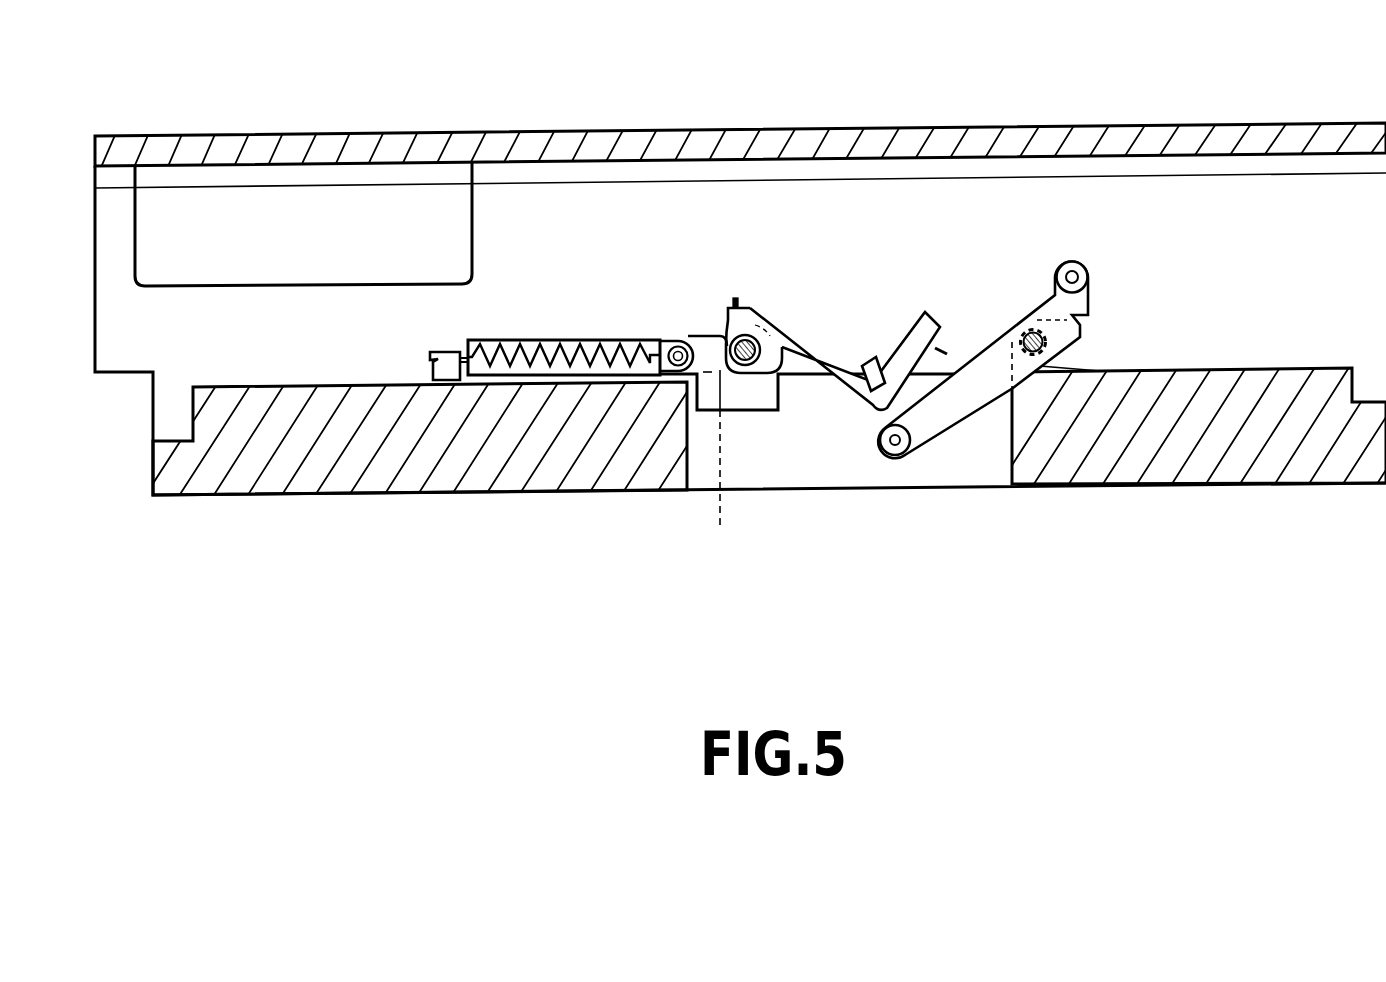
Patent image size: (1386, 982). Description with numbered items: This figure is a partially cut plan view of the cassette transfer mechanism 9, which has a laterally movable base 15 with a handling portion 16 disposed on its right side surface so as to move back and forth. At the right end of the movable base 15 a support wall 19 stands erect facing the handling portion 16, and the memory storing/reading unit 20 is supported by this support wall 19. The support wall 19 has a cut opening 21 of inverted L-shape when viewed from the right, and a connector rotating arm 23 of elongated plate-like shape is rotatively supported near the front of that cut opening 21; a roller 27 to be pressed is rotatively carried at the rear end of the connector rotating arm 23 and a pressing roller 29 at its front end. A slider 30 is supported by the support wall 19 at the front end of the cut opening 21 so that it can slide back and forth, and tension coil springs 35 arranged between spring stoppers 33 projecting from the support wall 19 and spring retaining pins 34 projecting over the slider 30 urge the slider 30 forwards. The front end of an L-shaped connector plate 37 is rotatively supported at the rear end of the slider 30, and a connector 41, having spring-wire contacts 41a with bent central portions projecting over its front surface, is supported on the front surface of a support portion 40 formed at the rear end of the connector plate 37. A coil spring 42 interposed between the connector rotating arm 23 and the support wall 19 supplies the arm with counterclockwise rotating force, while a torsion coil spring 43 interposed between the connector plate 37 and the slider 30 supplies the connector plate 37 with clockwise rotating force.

The cassette transfer mechanism 9 is at (818, 121).
The movable base 15 is at (365, 148).
The handling portion 16 is at (240, 213).
The support wall 19 is at (1100, 460).
The memory storing/reading unit 20 is at (802, 452).
The cut opening 21 is at (687, 447).
The connector rotating arm 23 is at (963, 408).
The roller to be pressed 27 is at (1085, 265).
The pressing roller 29 is at (892, 456).
The slider 30 is at (567, 338).
The spring stopper 33 is at (452, 353).
The spring retaining pin 34 is at (673, 346).
The tension coil spring 35 is at (505, 340).
The connector plate 37 is at (813, 337).
The support portion 40 is at (953, 333).
The connector 41 is at (927, 320).
The contact 41a is at (888, 337).
The coil spring 42 is at (1077, 363).
The torsion coil spring 43 is at (723, 467).